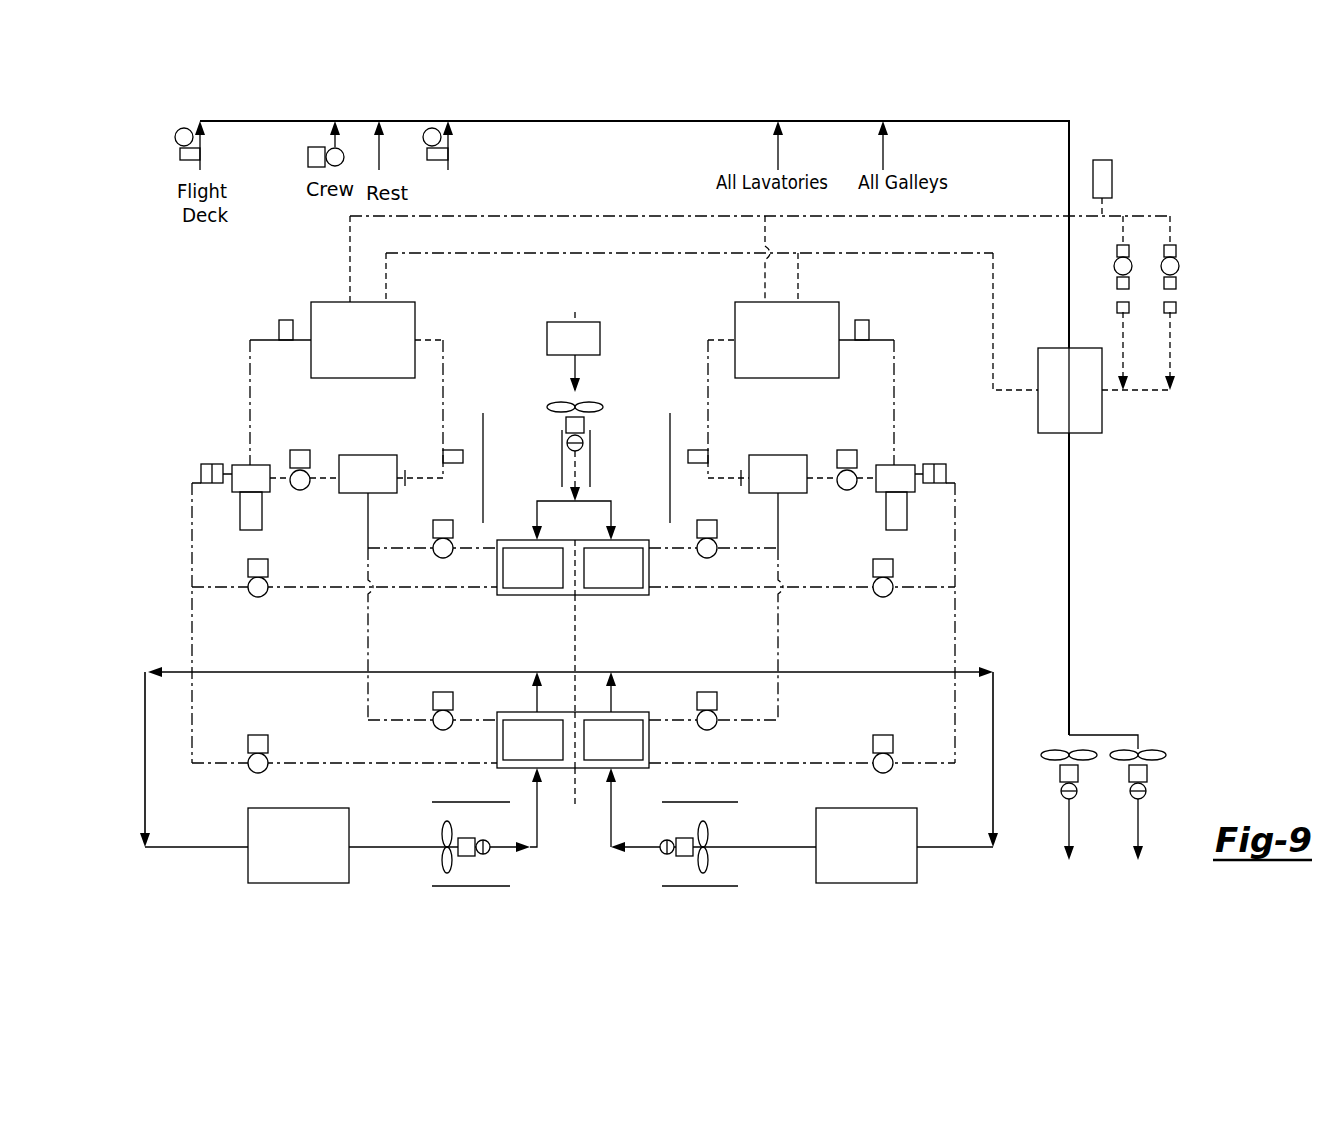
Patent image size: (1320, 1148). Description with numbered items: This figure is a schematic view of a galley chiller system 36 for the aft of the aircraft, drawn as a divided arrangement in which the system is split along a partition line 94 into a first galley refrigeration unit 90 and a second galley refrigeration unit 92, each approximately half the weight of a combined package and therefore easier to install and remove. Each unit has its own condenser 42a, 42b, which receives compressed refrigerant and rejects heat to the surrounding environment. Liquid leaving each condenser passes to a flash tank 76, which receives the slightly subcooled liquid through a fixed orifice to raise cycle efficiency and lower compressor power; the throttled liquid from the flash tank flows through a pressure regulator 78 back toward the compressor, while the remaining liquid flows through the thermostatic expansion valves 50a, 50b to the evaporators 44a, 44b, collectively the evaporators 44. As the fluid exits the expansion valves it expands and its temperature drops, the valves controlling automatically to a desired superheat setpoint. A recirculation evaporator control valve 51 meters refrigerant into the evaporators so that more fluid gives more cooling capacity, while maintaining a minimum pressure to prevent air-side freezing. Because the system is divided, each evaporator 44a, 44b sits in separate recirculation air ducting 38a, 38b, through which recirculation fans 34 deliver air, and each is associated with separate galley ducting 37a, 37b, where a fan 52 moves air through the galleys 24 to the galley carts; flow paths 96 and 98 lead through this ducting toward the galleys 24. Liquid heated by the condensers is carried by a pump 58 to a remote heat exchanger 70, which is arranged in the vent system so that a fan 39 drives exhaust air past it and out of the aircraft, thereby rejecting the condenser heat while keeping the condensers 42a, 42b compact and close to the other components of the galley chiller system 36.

The galleys 24 is at (248, 828).
The recirculation fans 34 is at (584, 425).
The galley chiller system 36 is at (1038, 116).
The galley ducting 37a is at (437, 886).
The galley ducting 37b is at (722, 886).
The recirculation air ducting 38a is at (483, 425).
The recirculation air ducting 38b is at (670, 425).
The fan 39 is at (1077, 793).
The condenser 42a is at (415, 313).
The condenser 42b is at (735, 313).
The evaporators 44 is at (250, 465).
The evaporator 44a is at (517, 538).
The evaporator 44b is at (633, 538).
The expansion valve 50a is at (433, 535).
The expansion valve 50b is at (717, 535).
The recirculation evaporator control valve 51 is at (268, 570).
The fan 52 is at (466, 838).
The pump 58 is at (1176, 258).
The heat exchanger 70 is at (1045, 348).
The flash tank 76 is at (368, 455).
The pressure regulator 78 is at (300, 450).
The first galley refrigeration unit 90 is at (152, 542).
The second galley refrigeration unit 92 is at (1120, 566).
The partition line 94 is at (575, 640).
The air flow path 96 is at (380, 862).
The air flow path 98 is at (780, 862).